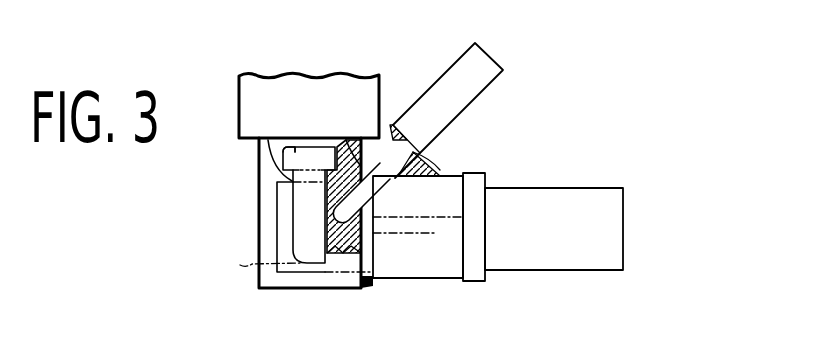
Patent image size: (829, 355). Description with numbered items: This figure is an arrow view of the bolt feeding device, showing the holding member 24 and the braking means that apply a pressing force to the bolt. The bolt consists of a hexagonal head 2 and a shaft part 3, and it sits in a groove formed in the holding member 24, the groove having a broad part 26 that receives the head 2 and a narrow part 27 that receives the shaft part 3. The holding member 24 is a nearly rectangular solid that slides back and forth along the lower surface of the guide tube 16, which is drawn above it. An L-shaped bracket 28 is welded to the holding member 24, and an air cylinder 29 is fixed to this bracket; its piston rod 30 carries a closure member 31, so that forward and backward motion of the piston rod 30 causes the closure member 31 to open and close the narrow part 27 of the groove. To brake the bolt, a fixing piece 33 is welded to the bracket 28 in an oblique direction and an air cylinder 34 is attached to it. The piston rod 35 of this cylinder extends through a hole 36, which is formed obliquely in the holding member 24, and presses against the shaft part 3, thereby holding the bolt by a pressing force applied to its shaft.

The hexagonal head 2 is at (328, 147).
The shaft part 3 is at (300, 220).
The guide tube 16 is at (239, 97).
The holding member 24 is at (259, 192).
The broad part 26 is at (292, 147).
The narrow part 27 is at (307, 263).
The L-shaped bracket 28 is at (485, 227).
The air cylinder 29 is at (587, 188).
The piston rod 30 is at (433, 233).
The closure member 31 is at (259, 265).
The fixing piece 33 is at (420, 153).
The air cylinder 34 is at (486, 87).
The piston rod 35 is at (385, 177).
The hole 36 is at (372, 207).